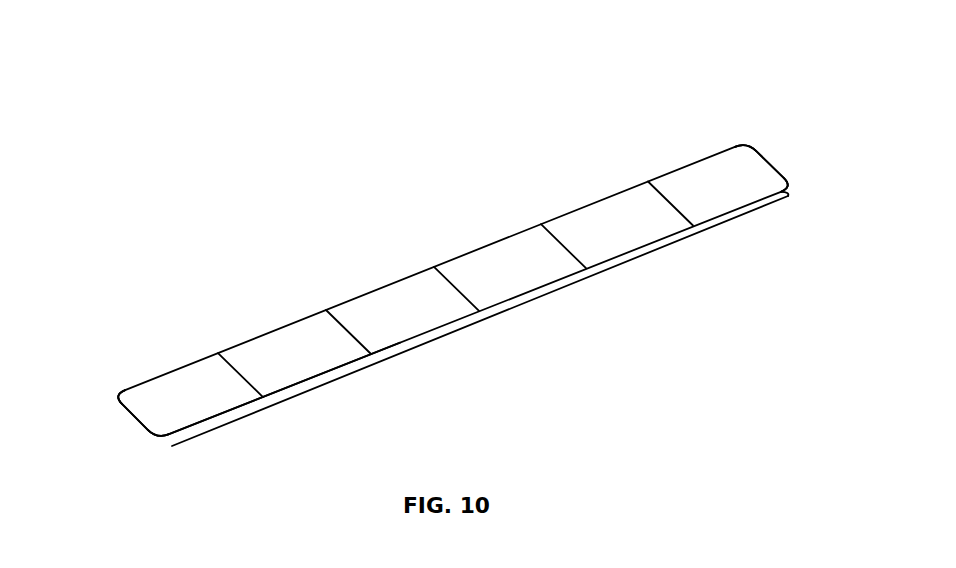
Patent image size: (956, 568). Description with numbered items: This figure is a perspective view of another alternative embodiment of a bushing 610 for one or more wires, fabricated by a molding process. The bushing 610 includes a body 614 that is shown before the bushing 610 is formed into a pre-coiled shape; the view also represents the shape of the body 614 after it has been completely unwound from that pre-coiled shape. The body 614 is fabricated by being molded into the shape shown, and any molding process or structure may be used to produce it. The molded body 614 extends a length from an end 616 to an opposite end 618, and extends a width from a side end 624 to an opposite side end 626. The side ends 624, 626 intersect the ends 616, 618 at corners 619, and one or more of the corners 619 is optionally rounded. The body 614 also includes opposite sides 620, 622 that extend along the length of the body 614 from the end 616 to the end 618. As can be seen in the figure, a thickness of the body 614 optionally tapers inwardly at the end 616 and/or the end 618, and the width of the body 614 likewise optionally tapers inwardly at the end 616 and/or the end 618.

The bushing 610 is at (454, 244).
The body 614 is at (520, 283).
The end 616 is at (122, 413).
The opposite end 618 is at (779, 160).
The corners 619 is at (113, 394).
The side 620 is at (613, 198).
The opposite side 622 is at (560, 285).
The side end 624 is at (346, 286).
The opposite side end 626 is at (315, 383).